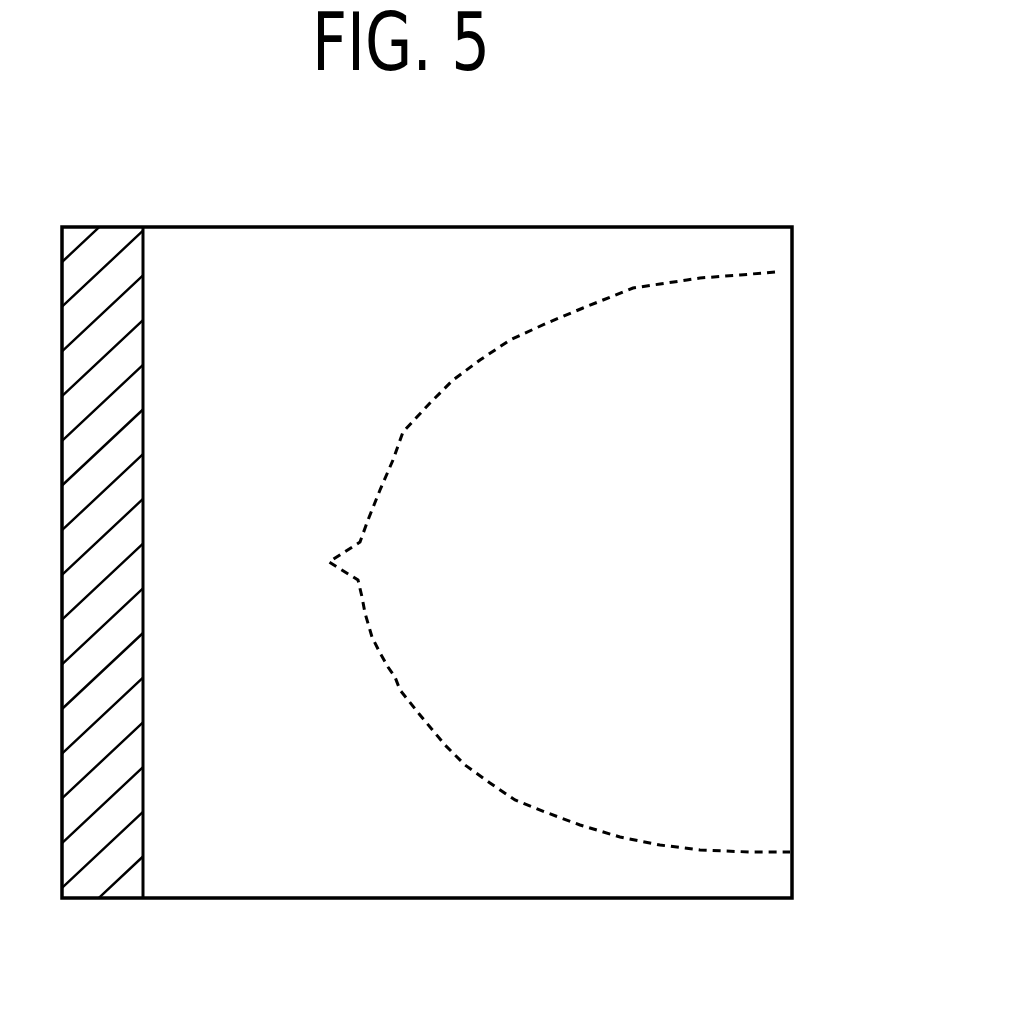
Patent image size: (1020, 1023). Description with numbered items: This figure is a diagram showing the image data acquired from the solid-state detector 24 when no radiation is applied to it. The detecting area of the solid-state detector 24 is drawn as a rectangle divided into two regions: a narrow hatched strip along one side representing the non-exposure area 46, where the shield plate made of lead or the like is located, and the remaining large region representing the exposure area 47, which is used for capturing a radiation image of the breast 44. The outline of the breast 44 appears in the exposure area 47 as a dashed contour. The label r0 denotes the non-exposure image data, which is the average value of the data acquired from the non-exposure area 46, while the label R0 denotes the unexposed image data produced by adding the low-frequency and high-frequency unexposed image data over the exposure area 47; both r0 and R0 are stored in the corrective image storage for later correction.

The solid-state detector 24 is at (803, 255).
The breast 44 is at (632, 287).
The non-exposure area 46 is at (112, 863).
The exposure area 47 is at (436, 864).
The non-exposure image data r0 is at (108, 332).
The unexposed image data R0 is at (432, 332).